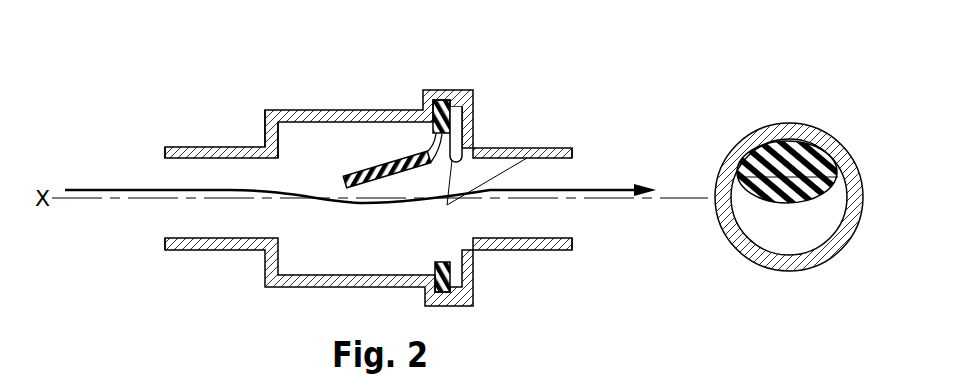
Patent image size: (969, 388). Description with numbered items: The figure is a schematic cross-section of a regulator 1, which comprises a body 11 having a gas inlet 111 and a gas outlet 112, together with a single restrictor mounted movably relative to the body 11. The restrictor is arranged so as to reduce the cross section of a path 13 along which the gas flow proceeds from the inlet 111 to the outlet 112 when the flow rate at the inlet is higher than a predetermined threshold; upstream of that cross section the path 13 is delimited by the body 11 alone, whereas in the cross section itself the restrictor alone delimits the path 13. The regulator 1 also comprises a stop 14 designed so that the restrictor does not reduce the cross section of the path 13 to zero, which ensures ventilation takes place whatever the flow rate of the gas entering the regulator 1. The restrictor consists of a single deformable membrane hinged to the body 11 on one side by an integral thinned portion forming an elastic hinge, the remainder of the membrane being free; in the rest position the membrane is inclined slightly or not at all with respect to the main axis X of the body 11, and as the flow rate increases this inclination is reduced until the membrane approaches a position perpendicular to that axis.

The regulator 1 is at (228, 102).
The body 11 is at (345, 108).
The gas inlet 111 is at (156, 233).
The gas outlet 112 is at (576, 226).
The path 13 is at (281, 145).
The stop 14 is at (500, 168).